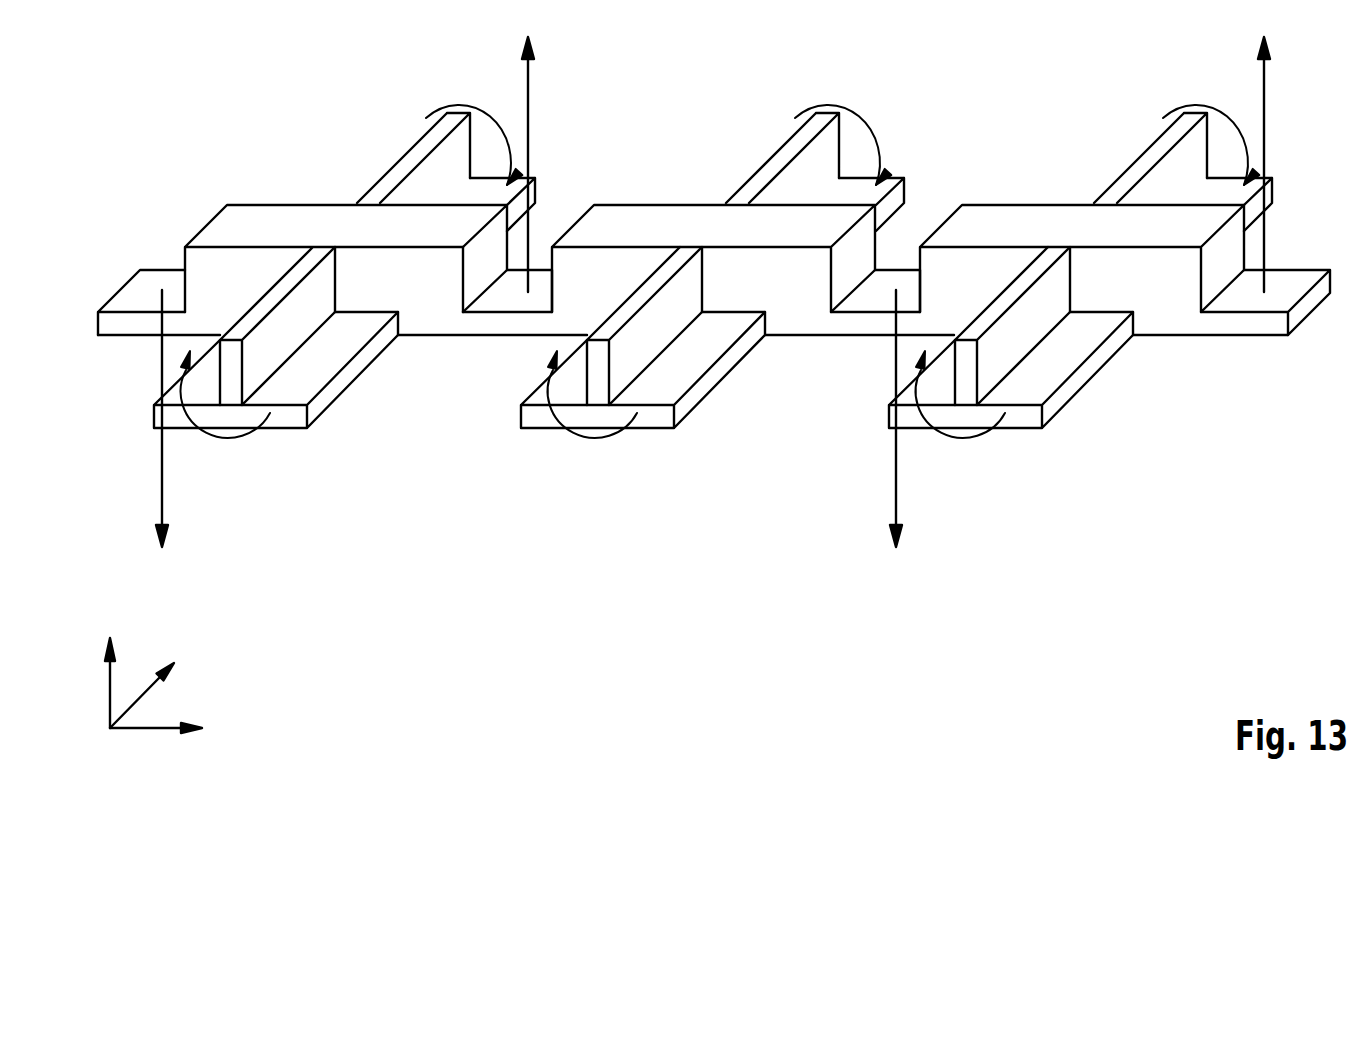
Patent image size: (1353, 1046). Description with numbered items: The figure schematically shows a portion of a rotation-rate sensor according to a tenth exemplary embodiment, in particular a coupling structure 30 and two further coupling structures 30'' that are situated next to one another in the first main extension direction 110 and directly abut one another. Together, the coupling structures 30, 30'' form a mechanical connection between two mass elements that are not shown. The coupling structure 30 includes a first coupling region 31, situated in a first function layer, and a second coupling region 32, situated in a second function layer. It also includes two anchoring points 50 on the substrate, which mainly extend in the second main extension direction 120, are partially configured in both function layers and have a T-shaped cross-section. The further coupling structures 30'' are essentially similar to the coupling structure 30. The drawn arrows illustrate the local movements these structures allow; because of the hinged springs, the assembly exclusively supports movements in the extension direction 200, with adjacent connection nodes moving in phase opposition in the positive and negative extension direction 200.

The coupling structure 30 is at (346, 266).
The further coupling structure 30'' is at (898, 266).
The anchoring point 50 is at (137, 274).
The first coupling region 31 is at (497, 323).
The second coupling region 32 is at (431, 273).
The first main extension direction 110 is at (247, 742).
The second main extension direction 120 is at (198, 658).
The extension direction 200 is at (130, 633).